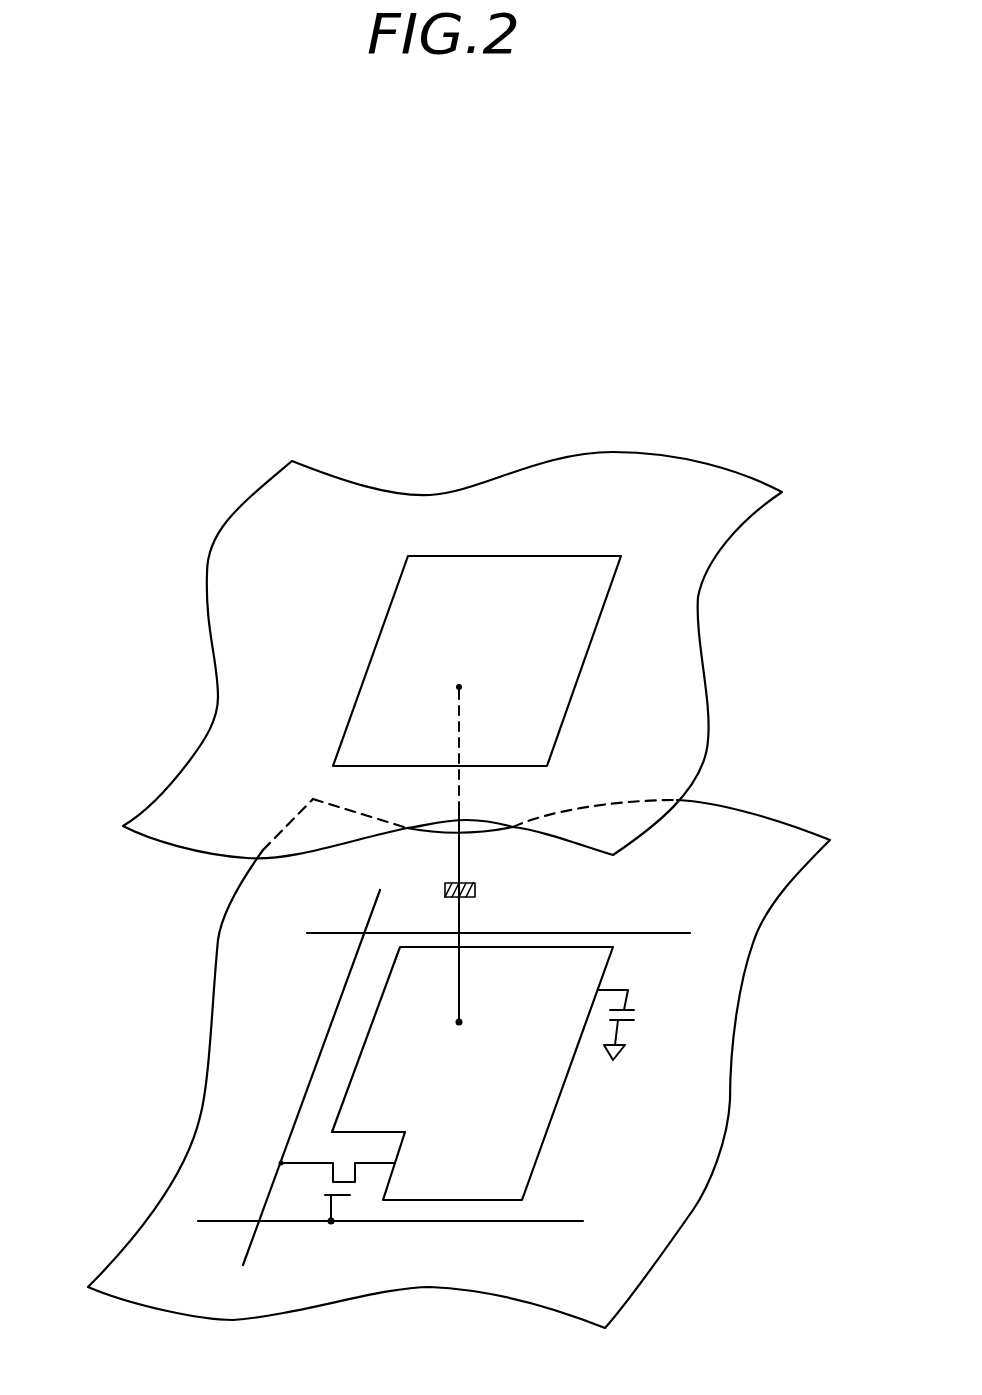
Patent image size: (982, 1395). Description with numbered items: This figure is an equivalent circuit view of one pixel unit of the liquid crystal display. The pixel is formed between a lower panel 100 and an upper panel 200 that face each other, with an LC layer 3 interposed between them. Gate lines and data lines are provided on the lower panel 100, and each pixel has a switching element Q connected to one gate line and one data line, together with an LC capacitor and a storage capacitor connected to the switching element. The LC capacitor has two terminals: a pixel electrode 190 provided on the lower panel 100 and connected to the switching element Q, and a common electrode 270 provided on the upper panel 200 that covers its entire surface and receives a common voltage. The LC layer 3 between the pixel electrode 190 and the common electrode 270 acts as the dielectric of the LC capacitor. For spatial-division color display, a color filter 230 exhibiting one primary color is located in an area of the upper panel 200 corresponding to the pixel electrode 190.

The lower panel 100 is at (472, 1063).
The pixel electrode 190 is at (551, 1128).
The upper panel 200 is at (479, 655).
The color filter 230 is at (580, 676).
The common electrode 270 is at (700, 627).
The LC layer 3 is at (110, 946).